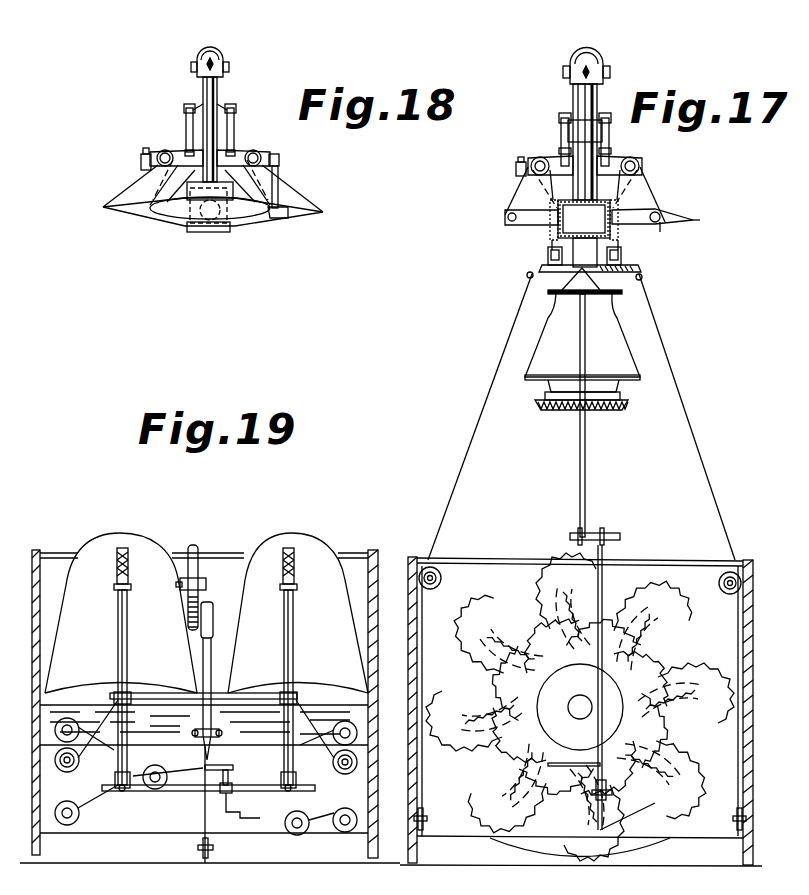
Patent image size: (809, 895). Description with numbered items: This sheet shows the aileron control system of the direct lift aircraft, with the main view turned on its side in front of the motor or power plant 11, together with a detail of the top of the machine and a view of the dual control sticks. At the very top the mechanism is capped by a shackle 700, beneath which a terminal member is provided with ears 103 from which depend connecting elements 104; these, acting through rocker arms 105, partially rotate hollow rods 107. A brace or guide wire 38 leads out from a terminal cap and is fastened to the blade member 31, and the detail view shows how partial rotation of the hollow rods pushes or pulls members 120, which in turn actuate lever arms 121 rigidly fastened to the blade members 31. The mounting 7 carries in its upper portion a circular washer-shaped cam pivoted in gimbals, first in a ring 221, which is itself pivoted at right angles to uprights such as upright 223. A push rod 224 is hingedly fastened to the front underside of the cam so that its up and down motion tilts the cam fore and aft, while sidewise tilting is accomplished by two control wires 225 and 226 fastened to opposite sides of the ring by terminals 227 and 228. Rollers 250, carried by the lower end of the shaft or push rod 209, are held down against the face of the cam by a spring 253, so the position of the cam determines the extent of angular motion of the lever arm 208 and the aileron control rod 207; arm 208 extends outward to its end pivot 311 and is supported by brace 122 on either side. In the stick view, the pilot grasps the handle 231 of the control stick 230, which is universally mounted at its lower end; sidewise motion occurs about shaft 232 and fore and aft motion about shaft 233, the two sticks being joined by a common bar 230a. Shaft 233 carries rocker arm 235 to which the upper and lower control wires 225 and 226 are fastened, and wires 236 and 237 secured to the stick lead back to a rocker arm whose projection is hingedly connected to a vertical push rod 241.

In FIG. 17, the shackle 700 is at (592, 50).
In FIG. 17, the ear 103 is at (572, 112).
In FIG. 18, the connecting element 104 is at (238, 132).
In FIG. 17, the connecting element 104 is at (612, 139).
In FIG. 17, the hollow rod 107 is at (640, 164).
In FIG. 17, the rocker arm 105 is at (616, 173).
In FIG. 17, the arm 122 is at (522, 193).
In FIG. 17, the lever arm 208 is at (655, 212).
In FIG. 17, the pin 311 is at (694, 221).
In FIG. 17, the shaft or push rod 209 is at (549, 231).
In FIG. 17, the aileron control rod 207 is at (660, 232).
In FIG. 17, the spring 253 is at (549, 255).
In FIG. 17, the rollers 250 is at (626, 262).
In FIG. 17, the terminal 227 is at (527, 276).
In FIG. 17, the terminal 228 is at (643, 278).
In FIG. 17, the ring 221 is at (630, 286).
In FIG. 17, the upright 223 is at (552, 296).
In FIG. 17, the mounting 7 is at (540, 348).
In FIG. 17, the push rod 224 is at (579, 474).
In FIG. 17, the control wire 225 is at (466, 448).
In FIG. 19, the control wire 225 is at (86, 803).
In FIG. 17, the control wire 226 is at (692, 428).
In FIG. 19, the control wire 226 is at (322, 826).
In FIG. 17, the motor or power plant 11 is at (508, 796).
In FIG. 17, the vertical push rod 241 is at (600, 607).
In FIG. 17, the wire 236 is at (553, 766).
In FIG. 19, the wire 236 is at (105, 745).
In FIG. 17, the wire 237 is at (670, 812).
In FIG. 19, the wire 237 is at (305, 740).
In FIG. 18, the guide wire or brace wire 38 is at (203, 92).
In FIG. 18, the member 120 is at (282, 175).
In FIG. 18, the blade member 31 is at (248, 224).
In FIG. 18, the lever arm 121 is at (282, 219).
In FIG. 19, the handle 231 is at (117, 562).
In FIG. 19, the control stick 230 is at (118, 622).
In FIG. 19, the cross bar 230a is at (233, 695).
In FIG. 19, the shaft 232 is at (122, 790).
In FIG. 19, the shaft 233 is at (252, 790).
In FIG. 19, the rocker arm 235 is at (250, 815).